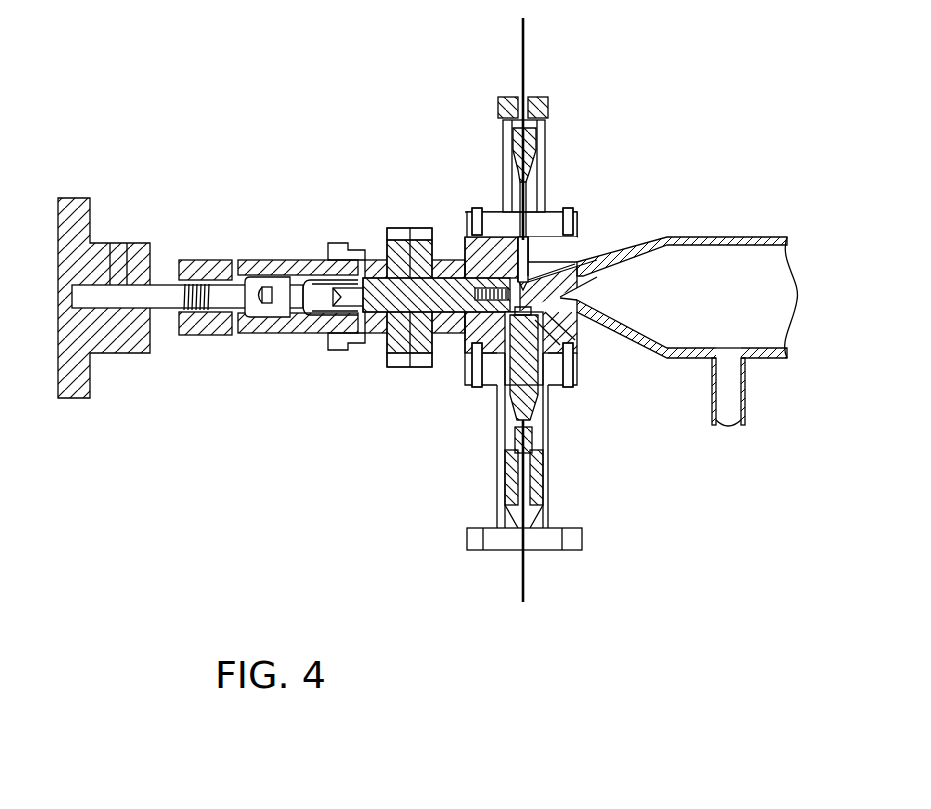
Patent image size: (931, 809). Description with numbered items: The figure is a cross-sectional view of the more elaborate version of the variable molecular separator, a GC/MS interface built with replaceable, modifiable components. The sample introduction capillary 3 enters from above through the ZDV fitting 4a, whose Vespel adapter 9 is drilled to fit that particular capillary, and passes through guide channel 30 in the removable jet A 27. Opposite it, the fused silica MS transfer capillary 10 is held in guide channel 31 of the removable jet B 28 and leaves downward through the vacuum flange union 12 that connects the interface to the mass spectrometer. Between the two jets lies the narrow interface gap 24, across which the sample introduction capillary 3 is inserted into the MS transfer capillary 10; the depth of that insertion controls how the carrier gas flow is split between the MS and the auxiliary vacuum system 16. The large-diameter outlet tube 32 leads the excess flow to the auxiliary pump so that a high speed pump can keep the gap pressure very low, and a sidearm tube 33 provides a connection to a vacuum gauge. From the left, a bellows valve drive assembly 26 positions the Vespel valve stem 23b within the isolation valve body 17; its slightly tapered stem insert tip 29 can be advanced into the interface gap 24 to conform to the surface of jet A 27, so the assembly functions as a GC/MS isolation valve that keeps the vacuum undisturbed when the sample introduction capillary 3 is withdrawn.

The sample introduction capillary 3 is at (525, 58).
The ZDV fitting 4a is at (538, 157).
The Vespel adapter 9 is at (522, 133).
The MS transfer capillary 10 is at (528, 573).
The vacuum flange union 12 is at (580, 533).
The auxiliary vacuum system 16 is at (703, 273).
The isolation valve body 17 is at (460, 252).
The valve stem 23b is at (375, 257).
The interface gap 24 is at (525, 290).
The bellows valve drive assembly 26 is at (335, 243).
The jet A 27 is at (482, 257).
The jet B 28 is at (572, 326).
The stem insert tip 29 is at (485, 295).
The guide channel 30 is at (505, 237).
The guide channel 31 is at (567, 343).
The outlet tube 32 is at (562, 298).
The sidearm tube 33 is at (728, 390).